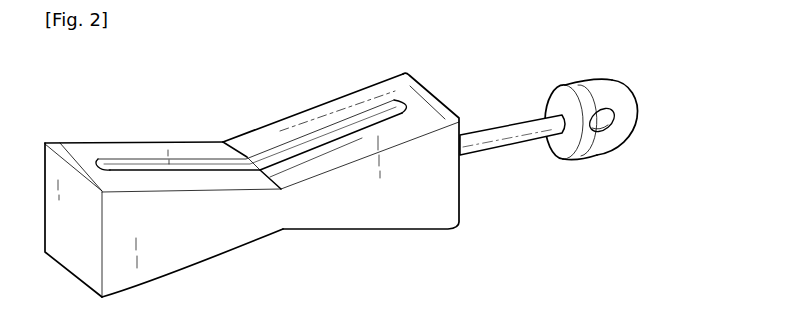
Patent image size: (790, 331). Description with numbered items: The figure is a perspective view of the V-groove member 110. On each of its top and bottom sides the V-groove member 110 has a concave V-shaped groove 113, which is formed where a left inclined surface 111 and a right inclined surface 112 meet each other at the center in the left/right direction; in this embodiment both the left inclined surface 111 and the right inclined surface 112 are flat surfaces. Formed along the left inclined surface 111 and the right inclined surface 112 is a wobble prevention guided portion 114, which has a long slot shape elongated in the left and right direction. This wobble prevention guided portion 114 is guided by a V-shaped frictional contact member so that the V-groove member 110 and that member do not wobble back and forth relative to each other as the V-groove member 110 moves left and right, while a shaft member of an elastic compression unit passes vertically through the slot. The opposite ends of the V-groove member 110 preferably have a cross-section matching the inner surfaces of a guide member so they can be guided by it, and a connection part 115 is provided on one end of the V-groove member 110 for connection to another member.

The V-groove member 110 is at (252, 180).
The left inclined surface 111 is at (193, 178).
The right inclined surface 112 is at (312, 122).
The V-shaped groove 113 is at (263, 132).
The wobble prevention guided portion 114 is at (360, 127).
The connection part 115 is at (515, 140).